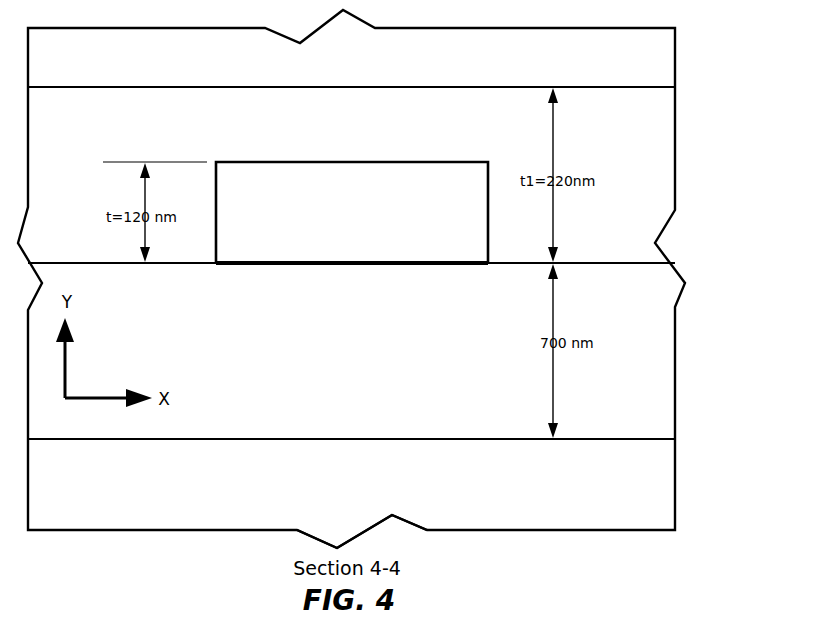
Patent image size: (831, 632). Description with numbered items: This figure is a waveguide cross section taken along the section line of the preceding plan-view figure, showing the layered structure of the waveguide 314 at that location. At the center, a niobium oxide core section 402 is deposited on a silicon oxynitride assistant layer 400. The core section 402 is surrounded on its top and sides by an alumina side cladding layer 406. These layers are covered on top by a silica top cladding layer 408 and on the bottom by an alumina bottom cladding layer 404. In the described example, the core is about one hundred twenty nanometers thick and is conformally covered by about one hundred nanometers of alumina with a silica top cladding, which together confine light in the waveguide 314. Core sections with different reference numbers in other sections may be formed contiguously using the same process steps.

The optical waveguide structure 314 is at (729, 24).
The silicon oxynitride assistant layer 400 is at (351, 382).
The core section 402 is at (352, 212).
The alumina bottom cladding layer 404 is at (362, 510).
The side cladding layer 406 is at (351, 184).
The silica top cladding layer 408 is at (351, 66).